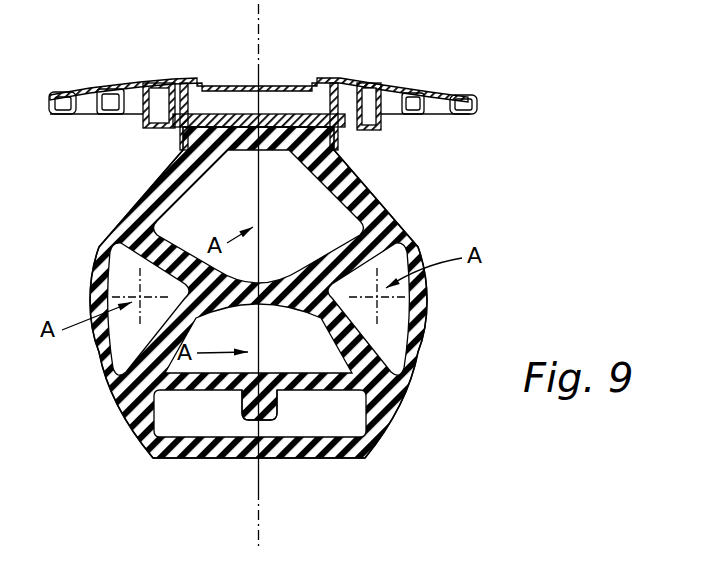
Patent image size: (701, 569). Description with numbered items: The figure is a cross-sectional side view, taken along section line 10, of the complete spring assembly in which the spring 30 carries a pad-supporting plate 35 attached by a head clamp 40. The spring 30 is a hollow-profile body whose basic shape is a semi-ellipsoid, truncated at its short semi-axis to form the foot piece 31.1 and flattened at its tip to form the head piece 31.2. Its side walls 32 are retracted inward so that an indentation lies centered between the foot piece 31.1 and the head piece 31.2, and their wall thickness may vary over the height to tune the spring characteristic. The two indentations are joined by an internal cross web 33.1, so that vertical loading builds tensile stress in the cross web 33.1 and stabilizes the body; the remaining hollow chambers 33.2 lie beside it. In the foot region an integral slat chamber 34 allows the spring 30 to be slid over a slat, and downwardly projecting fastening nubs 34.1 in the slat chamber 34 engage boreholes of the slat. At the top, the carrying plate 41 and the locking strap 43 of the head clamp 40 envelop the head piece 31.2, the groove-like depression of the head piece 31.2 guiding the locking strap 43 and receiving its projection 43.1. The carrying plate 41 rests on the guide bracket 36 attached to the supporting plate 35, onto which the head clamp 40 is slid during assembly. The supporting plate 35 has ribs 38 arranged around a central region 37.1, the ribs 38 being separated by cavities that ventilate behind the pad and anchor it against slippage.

The section line 10 is at (315, 20).
The spring 30 is at (415, 220).
The foot piece 31.1 is at (382, 422).
The head piece 31.2 is at (318, 133).
The side walls 32 is at (150, 195).
The internal cross web 33.1 is at (318, 347).
The side chambers 33.2 is at (97, 290).
The slat chamber 34 is at (330, 425).
The fastening nubs 34.1 is at (241, 413).
The supporting plate 35 is at (363, 80).
The guide bracket 36 is at (173, 133).
The central region 37.1 is at (232, 86).
The ribs 38 is at (135, 80).
The head clamp 40 is at (300, 220).
The carrying plate 41 is at (286, 117).
The locking strap 43 is at (242, 152).
The projection 43.1 is at (283, 153).